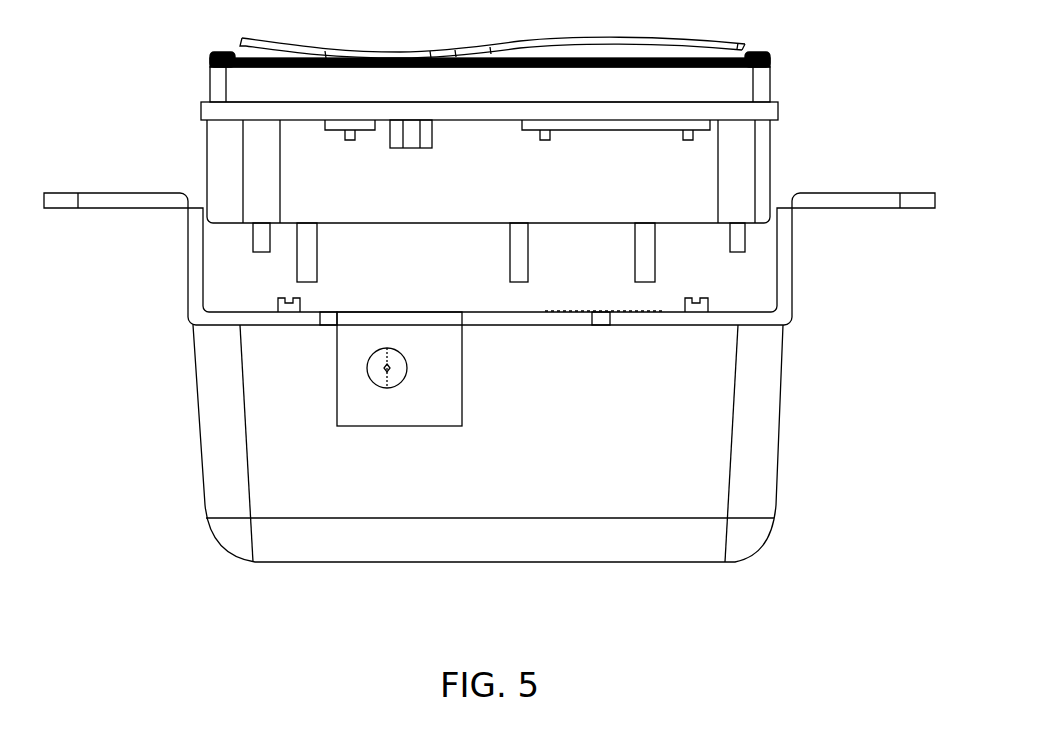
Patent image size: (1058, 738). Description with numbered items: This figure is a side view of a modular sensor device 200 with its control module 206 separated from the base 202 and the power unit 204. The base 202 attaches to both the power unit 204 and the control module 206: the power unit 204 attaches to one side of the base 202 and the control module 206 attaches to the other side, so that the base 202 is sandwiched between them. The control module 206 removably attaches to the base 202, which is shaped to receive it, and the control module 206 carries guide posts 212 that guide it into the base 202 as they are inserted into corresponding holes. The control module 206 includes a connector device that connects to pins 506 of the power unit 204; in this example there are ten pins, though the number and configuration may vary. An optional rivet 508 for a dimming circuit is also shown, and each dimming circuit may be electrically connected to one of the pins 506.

The modular sensor device 200 is at (508, 621).
The base 202 is at (877, 193).
The power unit 204 is at (783, 395).
The control module 206 is at (776, 160).
The guide posts 212 is at (252, 240).
The pins 506 is at (656, 310).
The rivet 508 is at (387, 388).